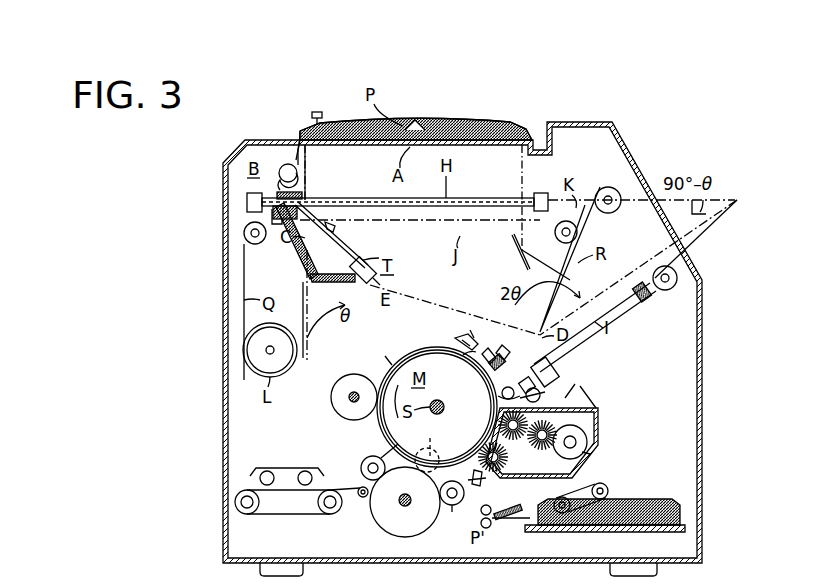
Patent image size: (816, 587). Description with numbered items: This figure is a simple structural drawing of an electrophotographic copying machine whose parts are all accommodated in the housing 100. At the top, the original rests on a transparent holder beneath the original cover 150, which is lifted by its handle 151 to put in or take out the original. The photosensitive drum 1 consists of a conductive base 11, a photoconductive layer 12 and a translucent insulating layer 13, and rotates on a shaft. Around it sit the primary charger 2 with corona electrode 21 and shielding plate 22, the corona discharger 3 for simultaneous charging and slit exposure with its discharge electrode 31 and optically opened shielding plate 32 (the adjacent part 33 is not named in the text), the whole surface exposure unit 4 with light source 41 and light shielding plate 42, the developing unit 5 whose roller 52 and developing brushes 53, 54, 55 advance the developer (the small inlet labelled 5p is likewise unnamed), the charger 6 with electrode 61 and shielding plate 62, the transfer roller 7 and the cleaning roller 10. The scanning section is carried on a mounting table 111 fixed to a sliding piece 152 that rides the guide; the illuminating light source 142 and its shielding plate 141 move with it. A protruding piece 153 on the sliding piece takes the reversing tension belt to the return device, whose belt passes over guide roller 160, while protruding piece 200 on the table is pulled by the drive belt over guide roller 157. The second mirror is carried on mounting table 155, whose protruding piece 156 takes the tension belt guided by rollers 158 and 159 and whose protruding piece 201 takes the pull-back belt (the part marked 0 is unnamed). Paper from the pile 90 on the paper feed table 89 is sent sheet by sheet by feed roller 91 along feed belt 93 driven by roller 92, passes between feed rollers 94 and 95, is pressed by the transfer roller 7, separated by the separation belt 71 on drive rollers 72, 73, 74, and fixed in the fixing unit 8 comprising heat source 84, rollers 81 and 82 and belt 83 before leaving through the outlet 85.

The housing 100 is at (630, 146).
The original cover 150 is at (505, 123).
The handle 151 is at (314, 112).
The sliding piece 152 is at (298, 192).
The shielding plate 141 is at (281, 166).
The light source 142 is at (297, 160).
The protruding piece 153 is at (270, 222).
The mounting table 111 is at (312, 218).
The protruding piece 200 is at (337, 229).
The guide roller 160 is at (255, 244).
The corona electrode 21 is at (470, 356).
The drive roller 73 is at (439, 440).
The corona discharge electrode 61 is at (434, 459).
The cleaning roller 10 is at (347, 377).
The photosensitive drum 1 is at (382, 361).
The conductive base 11 is at (430, 350).
The photoconductive layer 12 is at (414, 352).
The translucent insulating layer 13 is at (404, 346).
The primary charger 2 is at (448, 340).
The shielding plate 22 is at (470, 330).
The shielding plate 32 is at (488, 348).
The exposure slit 33 is at (505, 346).
The corona discharger 3 is at (492, 356).
The corona discharge electrode 31 is at (497, 370).
The whole surface exposure unit 4 is at (498, 398).
The guide roller 158 is at (607, 187).
The guide roller 157 is at (578, 232).
The guide roller 159 is at (656, 272).
The light source 41 is at (587, 337).
The light shielding plate 42 is at (540, 394).
The roller 0 is at (552, 388).
The mounting table 155 is at (556, 376).
The protruding piece 156 is at (572, 370).
The protruding piece 201 is at (618, 383).
The developing unit 5 is at (590, 428).
The developer tray inlet 5p is at (578, 404).
The roller 52 is at (590, 456).
The developing brush 54 is at (520, 436).
The developing brush 53 is at (548, 448).
The developing brush 55 is at (505, 462).
The charger 6 is at (455, 482).
The transcription paper feed roller 94 is at (508, 493).
The paper feed roller 91 is at (560, 492).
The transfer material feed belt 93 is at (590, 490).
The roller 92 is at (609, 493).
The paper pile 90 is at (655, 520).
The paper feed table 89 is at (610, 532).
The transcription paper feed roller 95 is at (490, 527).
The transfer roller 7 is at (405, 530).
The shielding plate 62 is at (417, 486).
The drive roller 72 is at (452, 506).
The drive roller 74 is at (361, 468).
The separation belt 71 is at (384, 456).
The fixing unit 8 is at (288, 470).
The heat source 84 is at (266, 471).
The belt 83 is at (296, 515).
The roller 82 is at (248, 514).
The roller 81 is at (331, 514).
The outlet 85 is at (222, 487).